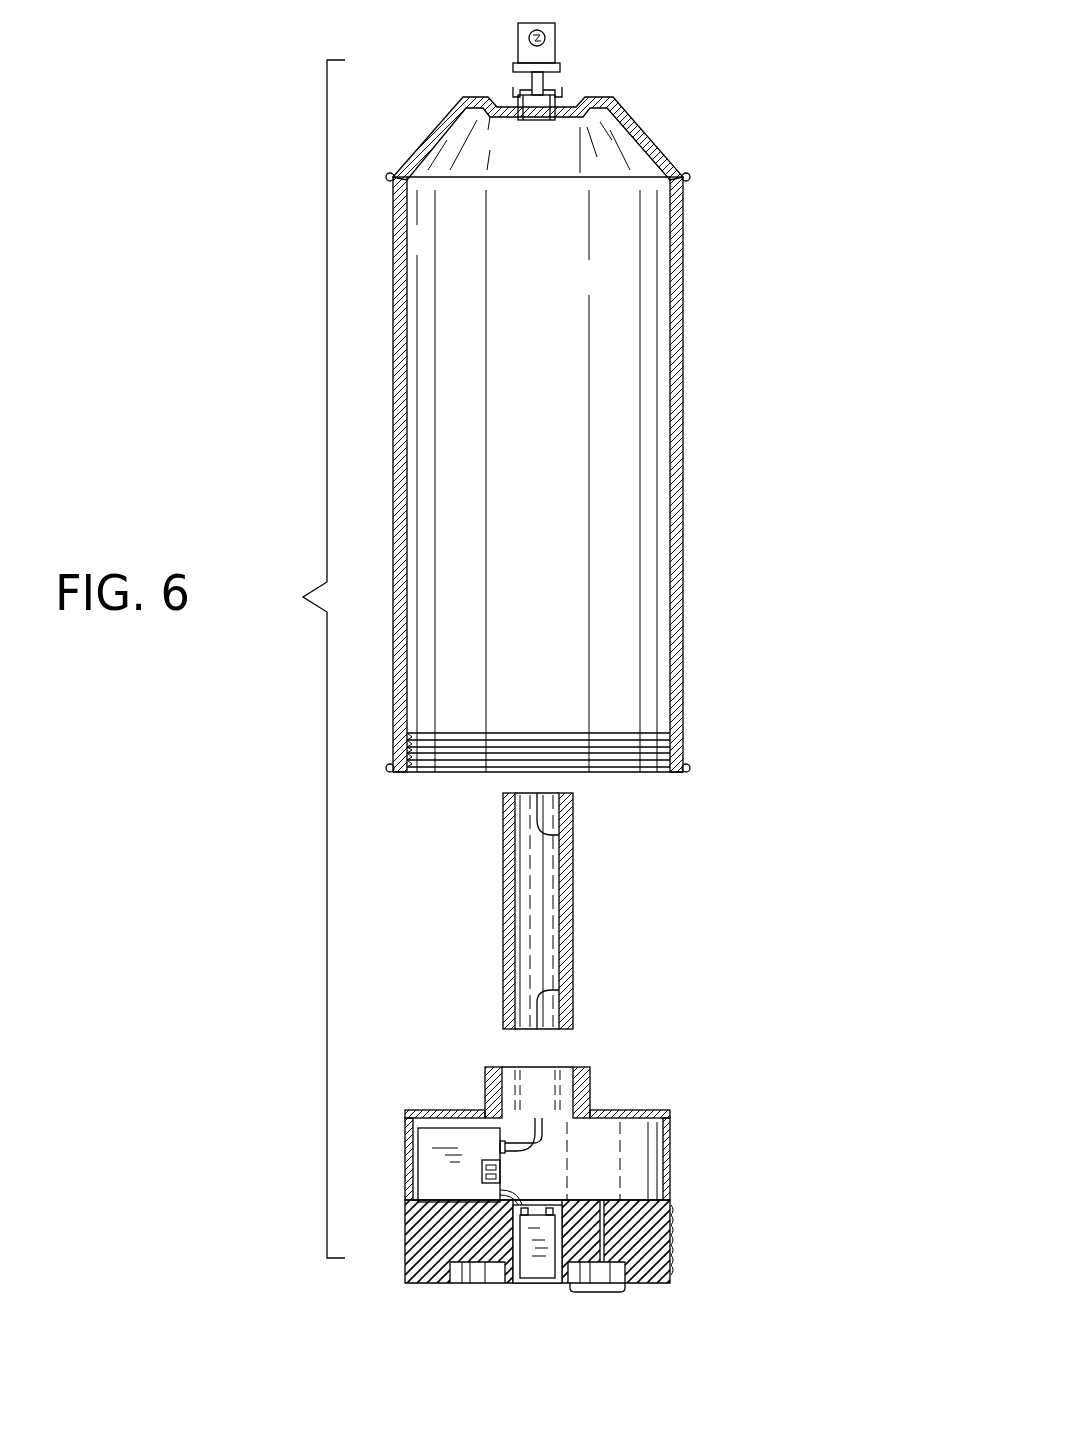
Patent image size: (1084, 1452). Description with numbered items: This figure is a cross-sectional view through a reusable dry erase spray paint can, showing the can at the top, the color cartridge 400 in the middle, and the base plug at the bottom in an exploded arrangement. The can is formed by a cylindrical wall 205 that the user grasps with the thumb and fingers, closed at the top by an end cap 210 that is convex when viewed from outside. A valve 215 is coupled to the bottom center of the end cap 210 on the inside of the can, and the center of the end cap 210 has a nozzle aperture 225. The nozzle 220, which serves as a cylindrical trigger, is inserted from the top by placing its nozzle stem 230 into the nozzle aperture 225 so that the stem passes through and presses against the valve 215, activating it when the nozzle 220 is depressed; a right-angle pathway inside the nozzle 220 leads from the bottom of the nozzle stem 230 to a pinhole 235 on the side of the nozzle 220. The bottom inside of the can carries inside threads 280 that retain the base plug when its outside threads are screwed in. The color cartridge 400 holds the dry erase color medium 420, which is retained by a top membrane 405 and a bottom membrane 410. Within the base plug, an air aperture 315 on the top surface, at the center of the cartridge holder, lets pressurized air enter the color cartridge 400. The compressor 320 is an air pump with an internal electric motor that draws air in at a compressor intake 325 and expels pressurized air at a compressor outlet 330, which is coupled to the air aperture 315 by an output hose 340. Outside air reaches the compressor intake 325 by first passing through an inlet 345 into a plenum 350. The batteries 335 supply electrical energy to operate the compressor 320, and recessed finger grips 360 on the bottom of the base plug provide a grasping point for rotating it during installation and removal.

The cylindrical wall 205 is at (675, 345).
The end cap 210 is at (655, 140).
The valve 215 is at (538, 122).
The nozzle 220 is at (516, 58).
The nozzle aperture 225 is at (555, 92).
The nozzle stem 230 is at (530, 80).
The pinhole 235 is at (546, 35).
The inside threads 280 is at (618, 752).
The air aperture 315 is at (540, 1112).
The compressor 320 is at (425, 1147).
The compressor intake 325 is at (485, 1172).
The compressor outlet 330 is at (500, 1147).
The batteries 335 is at (528, 1265).
The output hose 340 is at (540, 1148).
The inlet 345 is at (602, 1256).
The plenum 350 is at (632, 1172).
The recessed finger grips 360 is at (600, 1294).
The color cartridge 400 is at (573, 944).
The top membrane 405 is at (560, 836).
The bottom membrane 410 is at (559, 992).
The dry erase color medium 420 is at (528, 883).